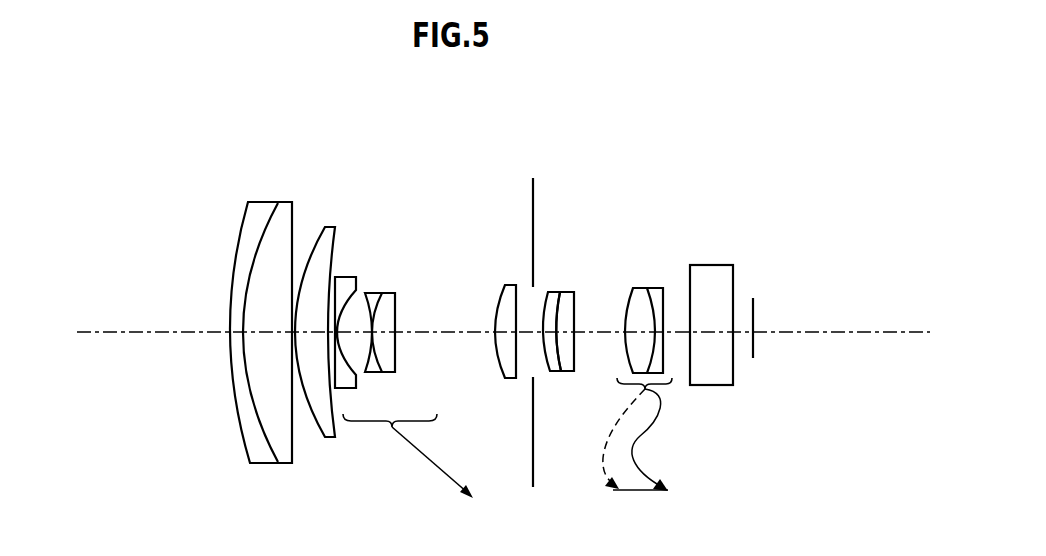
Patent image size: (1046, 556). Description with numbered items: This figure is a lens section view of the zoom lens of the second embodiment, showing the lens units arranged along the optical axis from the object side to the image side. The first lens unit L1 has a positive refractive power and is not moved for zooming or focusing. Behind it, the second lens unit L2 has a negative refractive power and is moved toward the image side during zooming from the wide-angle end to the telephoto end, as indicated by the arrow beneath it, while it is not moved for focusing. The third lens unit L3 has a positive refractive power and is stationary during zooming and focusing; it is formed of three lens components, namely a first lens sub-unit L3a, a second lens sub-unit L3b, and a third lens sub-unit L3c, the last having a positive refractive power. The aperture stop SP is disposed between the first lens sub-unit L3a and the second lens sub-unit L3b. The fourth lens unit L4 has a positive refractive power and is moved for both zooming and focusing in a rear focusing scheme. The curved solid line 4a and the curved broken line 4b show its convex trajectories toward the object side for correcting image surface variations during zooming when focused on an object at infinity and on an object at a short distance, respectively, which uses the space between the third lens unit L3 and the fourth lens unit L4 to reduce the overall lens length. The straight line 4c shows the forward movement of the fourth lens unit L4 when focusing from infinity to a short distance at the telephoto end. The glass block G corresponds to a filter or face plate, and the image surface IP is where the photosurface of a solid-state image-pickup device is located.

The first lens unit L1 is at (338, 185).
The second lens unit L2 is at (418, 269).
The third lens unit L3 is at (600, 117).
The first lens sub-unit L3a is at (508, 285).
The second lens sub-unit L3b is at (560, 291).
The third lens sub-unit L3c is at (567, 291).
The fourth lens unit L4 is at (673, 280).
The aperture stop SP is at (534, 187).
The glass block G is at (707, 265).
The image surface IP is at (753, 307).
The curved solid line 4a is at (633, 458).
The curved broken line 4b is at (620, 423).
The straight line 4c is at (645, 492).